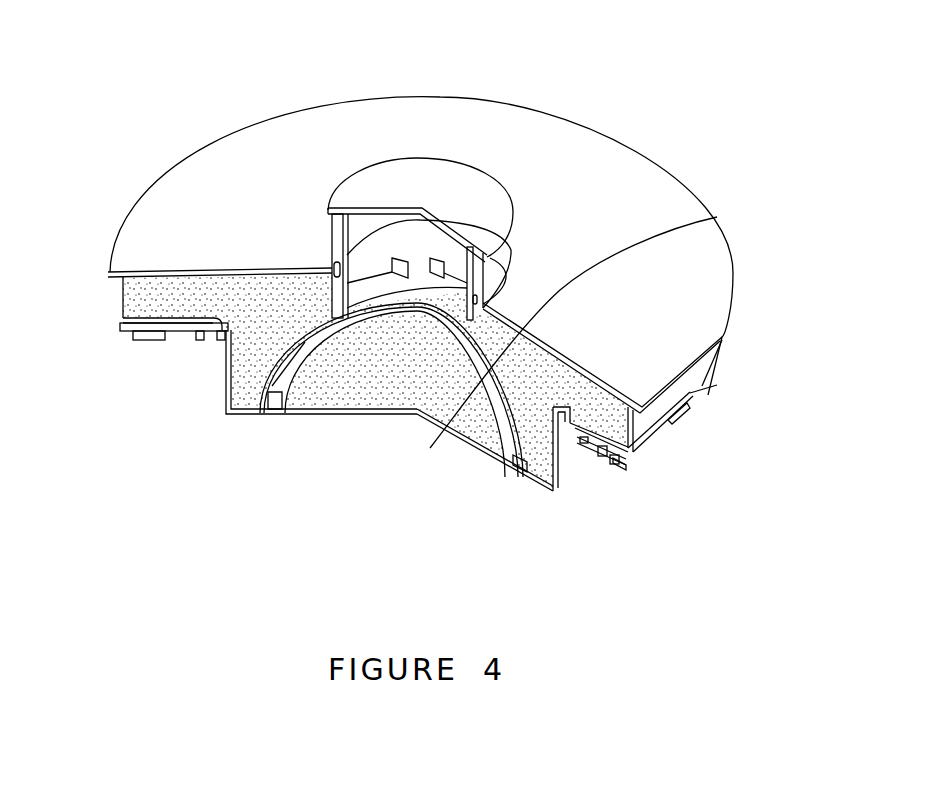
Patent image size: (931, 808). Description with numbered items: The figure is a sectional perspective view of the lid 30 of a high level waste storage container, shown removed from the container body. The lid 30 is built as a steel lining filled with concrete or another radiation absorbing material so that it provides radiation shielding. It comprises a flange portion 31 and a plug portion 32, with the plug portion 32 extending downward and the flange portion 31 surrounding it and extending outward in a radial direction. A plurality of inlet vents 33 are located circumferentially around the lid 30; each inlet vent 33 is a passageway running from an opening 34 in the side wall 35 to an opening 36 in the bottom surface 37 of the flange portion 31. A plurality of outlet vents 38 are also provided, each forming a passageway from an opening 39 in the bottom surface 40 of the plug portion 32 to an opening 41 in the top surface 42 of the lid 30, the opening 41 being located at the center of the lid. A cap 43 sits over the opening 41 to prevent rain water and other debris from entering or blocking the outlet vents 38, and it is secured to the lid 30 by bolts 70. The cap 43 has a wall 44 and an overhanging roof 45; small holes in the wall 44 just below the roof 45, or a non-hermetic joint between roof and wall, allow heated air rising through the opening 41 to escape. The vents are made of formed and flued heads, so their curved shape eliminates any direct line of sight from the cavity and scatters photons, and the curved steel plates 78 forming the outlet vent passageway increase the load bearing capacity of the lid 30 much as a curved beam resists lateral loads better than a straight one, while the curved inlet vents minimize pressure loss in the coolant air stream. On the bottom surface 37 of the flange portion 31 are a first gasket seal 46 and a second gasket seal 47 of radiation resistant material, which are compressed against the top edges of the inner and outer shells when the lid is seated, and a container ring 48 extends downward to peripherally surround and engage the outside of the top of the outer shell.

The lid 30 is at (658, 57).
The flange portion 31 is at (196, 395).
The plug portion 32 is at (222, 400).
The inlet vents 33 is at (150, 325).
The opening 34 is at (123, 320).
The side wall 35 is at (122, 300).
The opening 36 is at (557, 432).
The bottom surface 37 is at (180, 375).
The outlet vents 38 is at (305, 358).
The opening 39 is at (268, 410).
The bottom surface 40 is at (385, 425).
The opening 41 is at (337, 270).
The top surface 42 is at (447, 108).
The cap 43 is at (490, 155).
The wall 44 is at (487, 265).
The roof 45 is at (418, 163).
The first gasket seal 46 is at (220, 327).
The second gasket seal 47 is at (194, 332).
The container ring 48 is at (618, 467).
The bolts 70 is at (318, 348).
The curved steel plates 78 is at (330, 268).